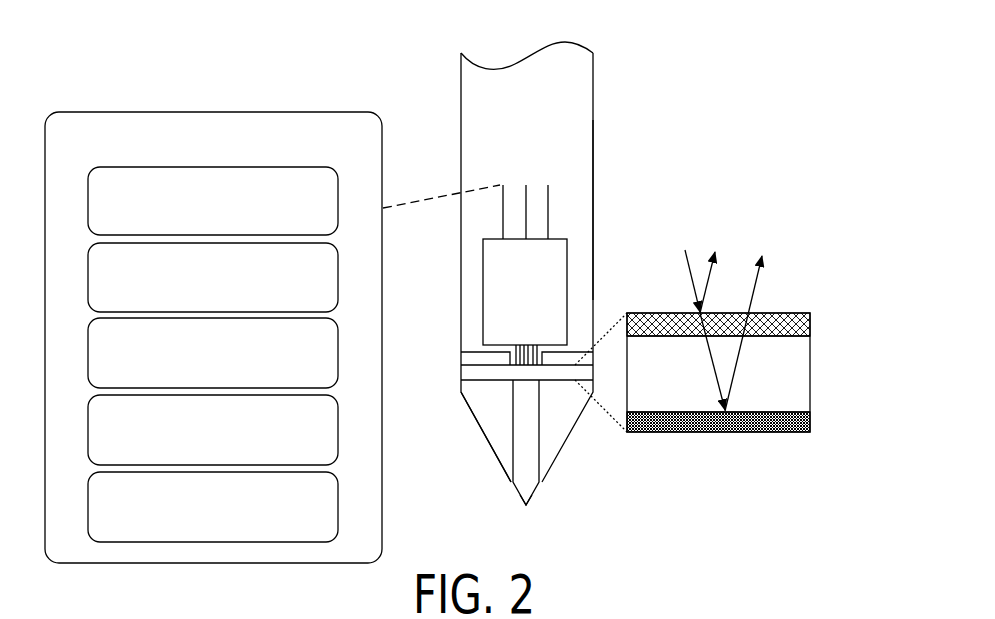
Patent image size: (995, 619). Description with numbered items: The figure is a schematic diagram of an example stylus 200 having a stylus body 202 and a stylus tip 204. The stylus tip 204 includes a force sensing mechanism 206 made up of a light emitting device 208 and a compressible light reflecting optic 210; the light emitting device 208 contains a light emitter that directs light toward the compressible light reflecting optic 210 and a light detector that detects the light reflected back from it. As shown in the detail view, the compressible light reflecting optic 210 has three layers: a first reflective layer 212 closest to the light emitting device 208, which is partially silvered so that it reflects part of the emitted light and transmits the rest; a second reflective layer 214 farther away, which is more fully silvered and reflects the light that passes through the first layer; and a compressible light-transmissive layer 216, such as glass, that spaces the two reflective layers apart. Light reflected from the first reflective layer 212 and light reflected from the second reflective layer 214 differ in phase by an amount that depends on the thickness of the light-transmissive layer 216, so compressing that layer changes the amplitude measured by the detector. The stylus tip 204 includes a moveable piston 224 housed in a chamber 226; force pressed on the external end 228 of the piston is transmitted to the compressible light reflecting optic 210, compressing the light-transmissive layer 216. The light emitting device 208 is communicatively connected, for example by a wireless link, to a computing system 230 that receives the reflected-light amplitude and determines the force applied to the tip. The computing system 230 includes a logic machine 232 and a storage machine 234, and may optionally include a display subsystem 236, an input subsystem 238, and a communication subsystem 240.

The stylus 200 is at (636, 263).
The stylus body 202 is at (596, 80).
The stylus tip 204 is at (596, 200).
The force sensing mechanism 206 is at (528, 168).
The light emitting device 208 is at (525, 292).
The compressible light reflecting optic 210 is at (465, 372).
The first reflective layer 212 is at (807, 314).
The second reflective layer 214 is at (806, 426).
The compressible light-transmissive layer 216 is at (805, 364).
The moveable piston 224 is at (518, 453).
The chamber 226 is at (511, 410).
The external end 228 is at (527, 499).
The computing system 230 is at (213, 337).
The logic machine 232 is at (213, 201).
The storage machine 234 is at (213, 277).
The display subsystem 236 is at (213, 353).
The input subsystem 238 is at (213, 430).
The communication subsystem 240 is at (213, 507).